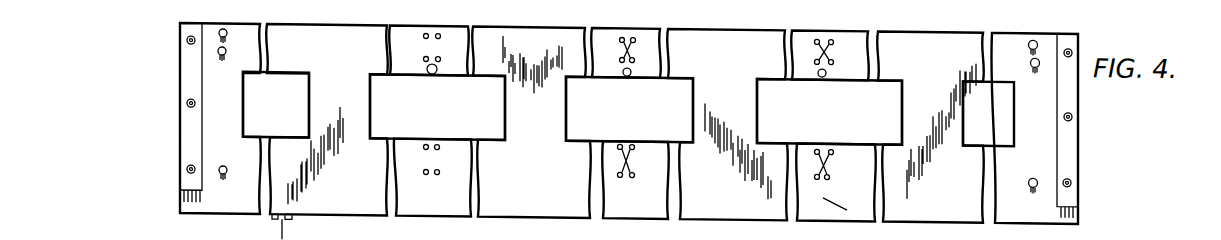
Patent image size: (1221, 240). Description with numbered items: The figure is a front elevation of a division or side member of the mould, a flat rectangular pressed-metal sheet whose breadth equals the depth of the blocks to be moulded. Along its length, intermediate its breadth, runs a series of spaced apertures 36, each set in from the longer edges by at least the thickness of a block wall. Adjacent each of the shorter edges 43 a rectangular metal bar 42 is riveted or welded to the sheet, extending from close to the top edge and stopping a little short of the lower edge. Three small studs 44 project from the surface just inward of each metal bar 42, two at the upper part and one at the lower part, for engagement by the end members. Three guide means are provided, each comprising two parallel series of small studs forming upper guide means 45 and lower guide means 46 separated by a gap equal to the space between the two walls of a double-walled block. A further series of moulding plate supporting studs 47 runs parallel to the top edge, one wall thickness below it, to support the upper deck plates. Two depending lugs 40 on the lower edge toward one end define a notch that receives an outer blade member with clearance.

The spaced apertures 36 is at (285, 112).
The depending lugs 40 is at (272, 216).
The rectangular metal bar 42 is at (198, 87).
The shorter edges 43 is at (181, 125).
The small studs 44 is at (226, 36).
The upper guide means studs 45 is at (628, 45).
The lower guide means studs 46 is at (628, 156).
The moulding plate supporting studs 47 is at (631, 67).